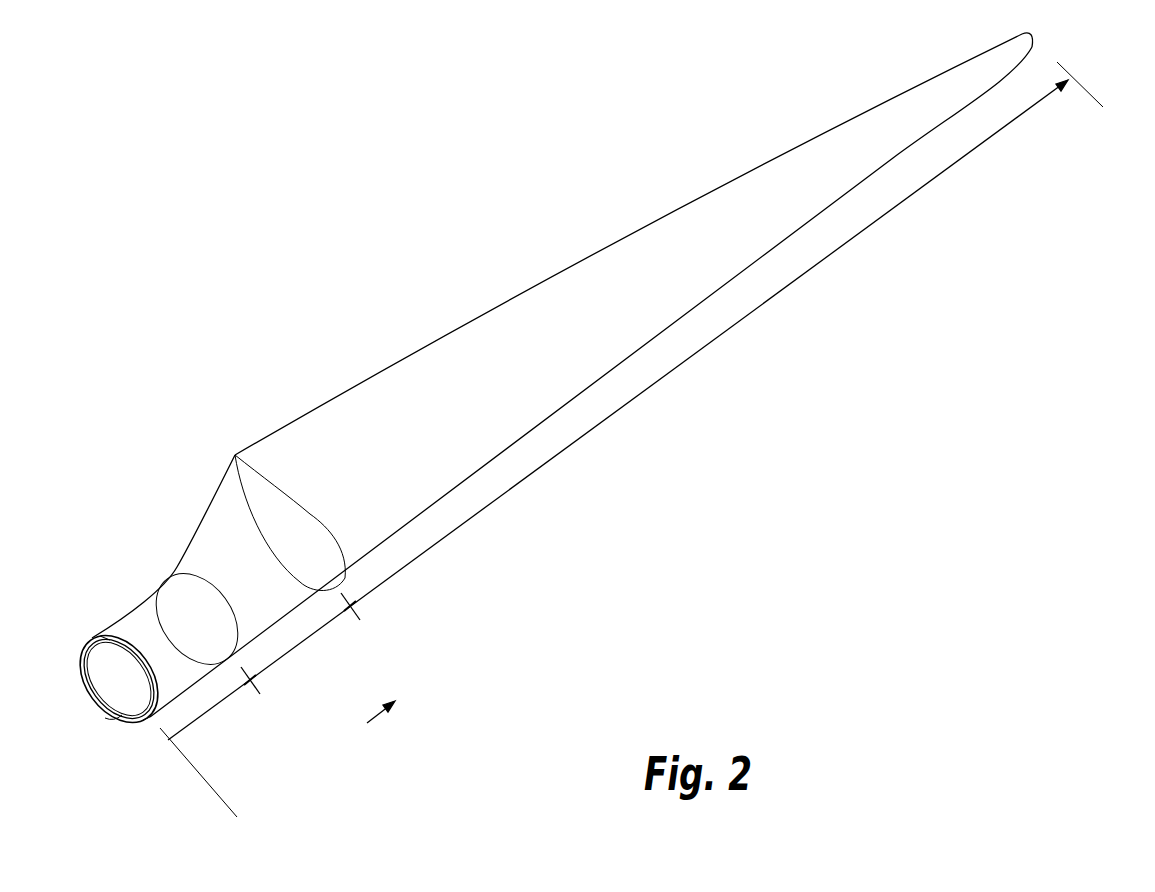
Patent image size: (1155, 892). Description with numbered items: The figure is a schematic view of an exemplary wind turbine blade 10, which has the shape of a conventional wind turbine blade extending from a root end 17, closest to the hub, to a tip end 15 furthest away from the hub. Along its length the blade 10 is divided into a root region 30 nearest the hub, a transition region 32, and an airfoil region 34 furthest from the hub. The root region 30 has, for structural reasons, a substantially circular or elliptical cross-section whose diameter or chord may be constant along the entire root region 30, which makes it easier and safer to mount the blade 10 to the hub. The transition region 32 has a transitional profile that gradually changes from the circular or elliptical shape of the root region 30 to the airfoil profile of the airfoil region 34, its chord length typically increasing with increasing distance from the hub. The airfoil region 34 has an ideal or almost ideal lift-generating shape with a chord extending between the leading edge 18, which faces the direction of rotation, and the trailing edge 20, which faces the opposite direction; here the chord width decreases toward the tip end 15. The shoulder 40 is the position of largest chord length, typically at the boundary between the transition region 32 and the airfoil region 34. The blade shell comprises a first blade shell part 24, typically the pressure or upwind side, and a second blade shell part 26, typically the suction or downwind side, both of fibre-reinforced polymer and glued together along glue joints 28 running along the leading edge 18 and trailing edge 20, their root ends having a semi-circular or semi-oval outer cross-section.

The wind turbine blade 10 is at (587, 425).
The tip end 15 is at (1034, 36).
The root end 17 is at (105, 662).
The leading edge 18 is at (750, 267).
The trailing edge 20 is at (620, 240).
The first blade shell part 24 is at (108, 638).
The second blade shell part 26 is at (122, 715).
The glue joints 28 is at (105, 632).
The root region 30 is at (213, 712).
The transition region 32 is at (302, 642).
The airfoil region 34 is at (640, 393).
The shoulder 40 is at (235, 455).